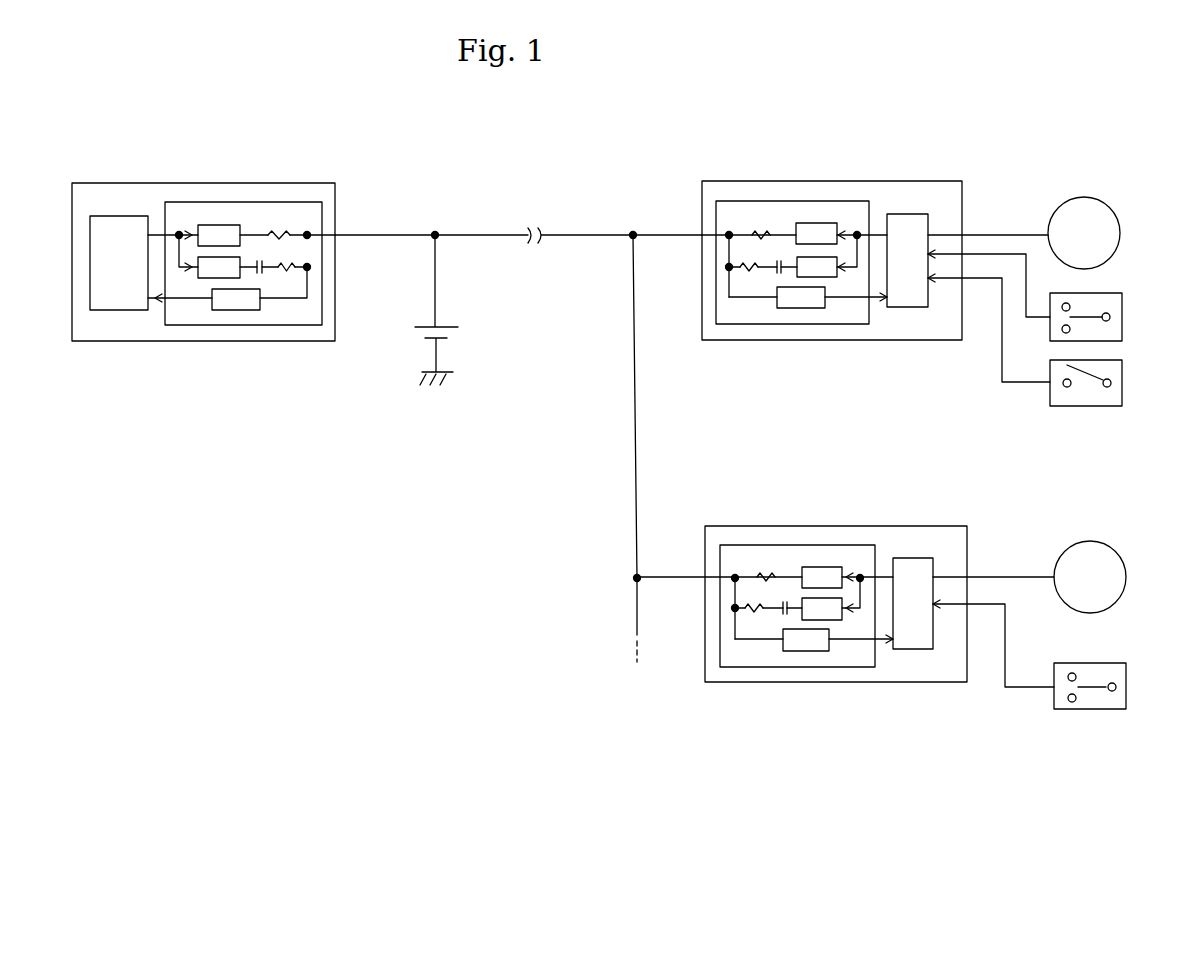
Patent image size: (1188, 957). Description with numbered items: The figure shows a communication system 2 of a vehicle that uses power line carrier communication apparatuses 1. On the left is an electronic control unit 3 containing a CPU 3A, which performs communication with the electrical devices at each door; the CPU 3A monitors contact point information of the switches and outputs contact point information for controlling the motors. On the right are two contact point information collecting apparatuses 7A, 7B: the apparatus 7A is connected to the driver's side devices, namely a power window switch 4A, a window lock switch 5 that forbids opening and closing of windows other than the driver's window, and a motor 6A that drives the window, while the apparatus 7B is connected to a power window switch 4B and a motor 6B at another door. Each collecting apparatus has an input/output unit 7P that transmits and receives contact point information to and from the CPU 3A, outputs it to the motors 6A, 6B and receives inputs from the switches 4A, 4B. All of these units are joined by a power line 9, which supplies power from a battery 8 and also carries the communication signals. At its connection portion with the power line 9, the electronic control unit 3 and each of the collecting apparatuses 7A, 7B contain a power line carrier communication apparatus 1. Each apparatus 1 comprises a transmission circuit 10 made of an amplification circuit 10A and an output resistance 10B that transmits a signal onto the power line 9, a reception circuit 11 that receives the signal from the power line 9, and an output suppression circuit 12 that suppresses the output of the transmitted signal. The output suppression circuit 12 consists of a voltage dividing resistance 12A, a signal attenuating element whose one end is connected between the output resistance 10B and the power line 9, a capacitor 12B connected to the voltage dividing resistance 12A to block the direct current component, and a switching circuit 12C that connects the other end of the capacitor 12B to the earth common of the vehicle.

The power line carrier communication apparatus 1 is at (240, 202).
The communication system 2 is at (294, 628).
The electronic control unit (ECU) 3 is at (112, 183).
The CPU 3A is at (103, 310).
The power window switch 4A is at (1115, 293).
The power window switch 4B is at (1088, 663).
The window lock switch 5 is at (1108, 406).
The motor 6A is at (1103, 200).
The motor 6B is at (1113, 552).
The contact point information collecting apparatus 7A is at (950, 181).
The contact point information collecting apparatus 7B is at (953, 526).
The input/output unit 7P is at (913, 214).
The battery 8 is at (455, 327).
The power line 9 is at (585, 235).
The transmission circuit 10 is at (295, 135).
The amplification circuit 10A is at (240, 225).
The output resistance 10B is at (283, 233).
The reception circuit 11 is at (222, 310).
The output suppression circuit 12 is at (258, 417).
The voltage dividing resistance 12A is at (290, 274).
The capacitor 12B is at (260, 276).
The switching circuit 12C is at (227, 278).